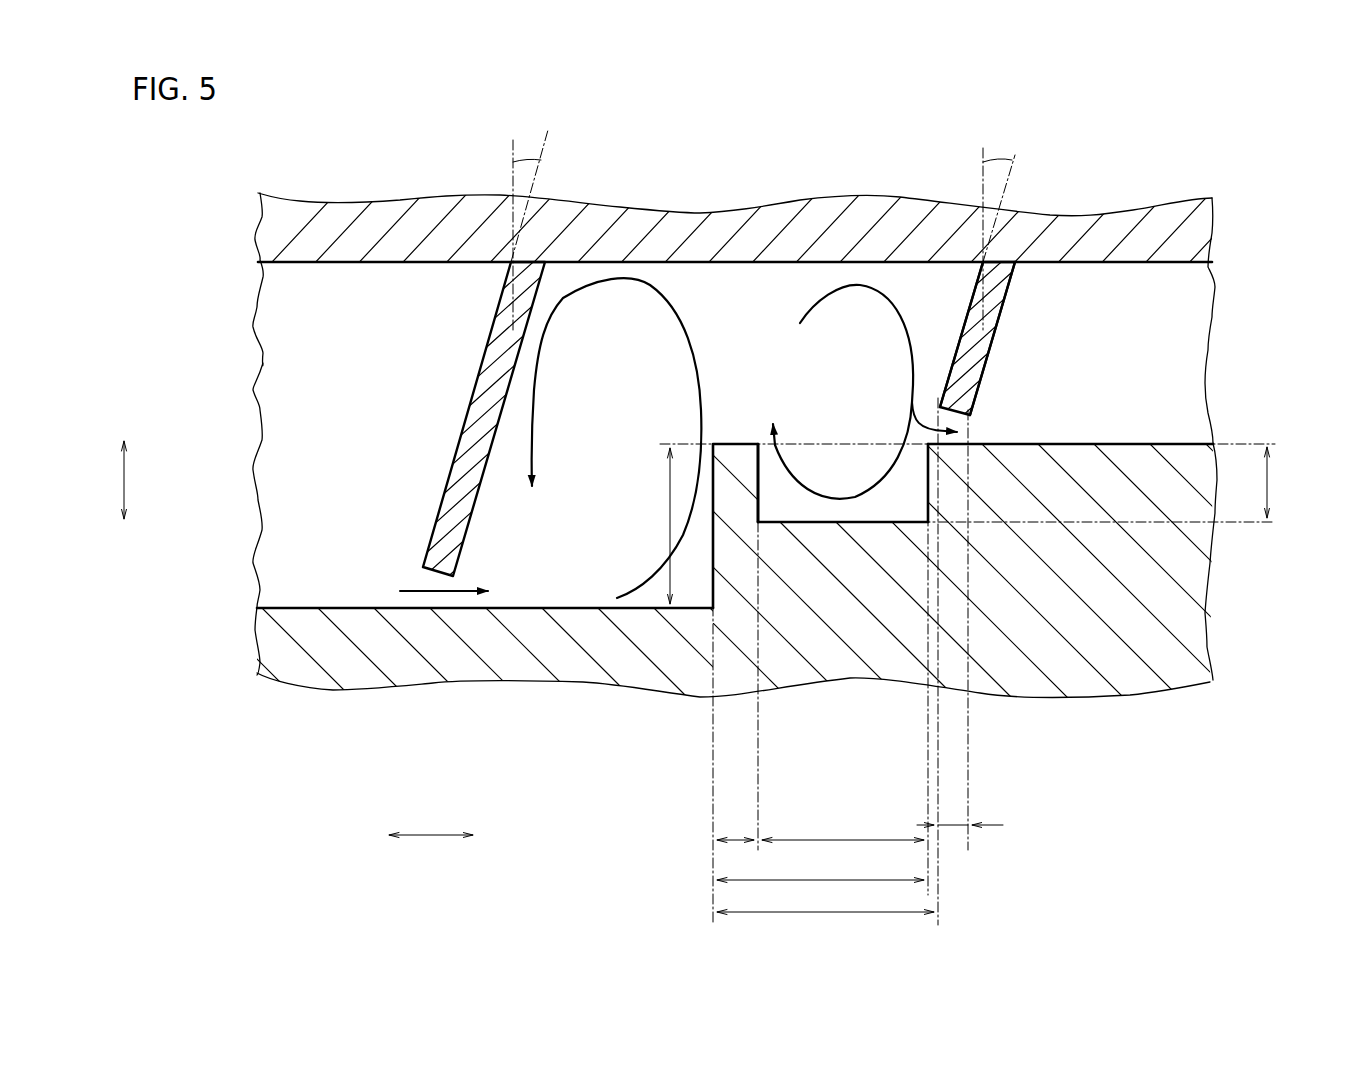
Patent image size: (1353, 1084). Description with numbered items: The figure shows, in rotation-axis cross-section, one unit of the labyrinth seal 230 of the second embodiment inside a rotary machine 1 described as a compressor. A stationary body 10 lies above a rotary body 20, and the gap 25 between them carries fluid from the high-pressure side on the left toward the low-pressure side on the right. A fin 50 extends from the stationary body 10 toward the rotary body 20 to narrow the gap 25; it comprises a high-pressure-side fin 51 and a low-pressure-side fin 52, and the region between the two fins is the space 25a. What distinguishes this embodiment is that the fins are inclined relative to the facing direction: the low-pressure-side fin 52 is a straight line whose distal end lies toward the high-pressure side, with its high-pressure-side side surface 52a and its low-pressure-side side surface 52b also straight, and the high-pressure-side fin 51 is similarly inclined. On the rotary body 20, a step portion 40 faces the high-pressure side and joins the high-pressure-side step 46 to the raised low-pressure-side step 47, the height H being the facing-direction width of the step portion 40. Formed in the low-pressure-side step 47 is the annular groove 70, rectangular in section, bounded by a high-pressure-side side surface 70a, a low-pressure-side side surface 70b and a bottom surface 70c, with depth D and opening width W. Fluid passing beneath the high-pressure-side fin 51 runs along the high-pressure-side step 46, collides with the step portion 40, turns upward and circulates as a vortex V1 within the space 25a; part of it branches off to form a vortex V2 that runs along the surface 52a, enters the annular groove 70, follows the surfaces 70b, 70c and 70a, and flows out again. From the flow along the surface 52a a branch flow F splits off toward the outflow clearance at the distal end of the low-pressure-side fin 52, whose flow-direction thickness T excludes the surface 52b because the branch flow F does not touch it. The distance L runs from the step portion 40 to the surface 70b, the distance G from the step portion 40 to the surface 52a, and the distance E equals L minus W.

The rotary machine 1 is at (236, 174).
The stationary body 10 is at (307, 249).
The rotary body 20 is at (293, 616).
The gap 25 is at (288, 372).
The space 25a is at (740, 283).
The labyrinth seal 230 is at (288, 446).
The step portion 40 is at (690, 608).
The high-pressure-side step 46 is at (569, 608).
The low-pressure-side step 47 is at (1175, 443).
The fin 50 is at (646, 347).
The high-pressure-side fin 51 is at (497, 312).
The low-pressure-side fin 52 is at (1004, 300).
The high-pressure-side side surface 52a is at (967, 313).
The low-pressure-side side surface 52b is at (995, 333).
The annular groove 70 is at (792, 386).
The high-pressure-side side surface 70a is at (758, 512).
The low-pressure-side side surface 70b is at (915, 518).
The bottom surface 70c is at (840, 526).
The vortex V1 is at (601, 280).
The vortex V2 is at (858, 284).
The branch flow F is at (912, 420).
The height H is at (659, 526).
The depth D is at (1279, 482).
The distance E is at (735, 826).
The opening width W is at (843, 826).
The thickness T is at (961, 811).
The distance L is at (820, 868).
The distance G is at (825, 900).